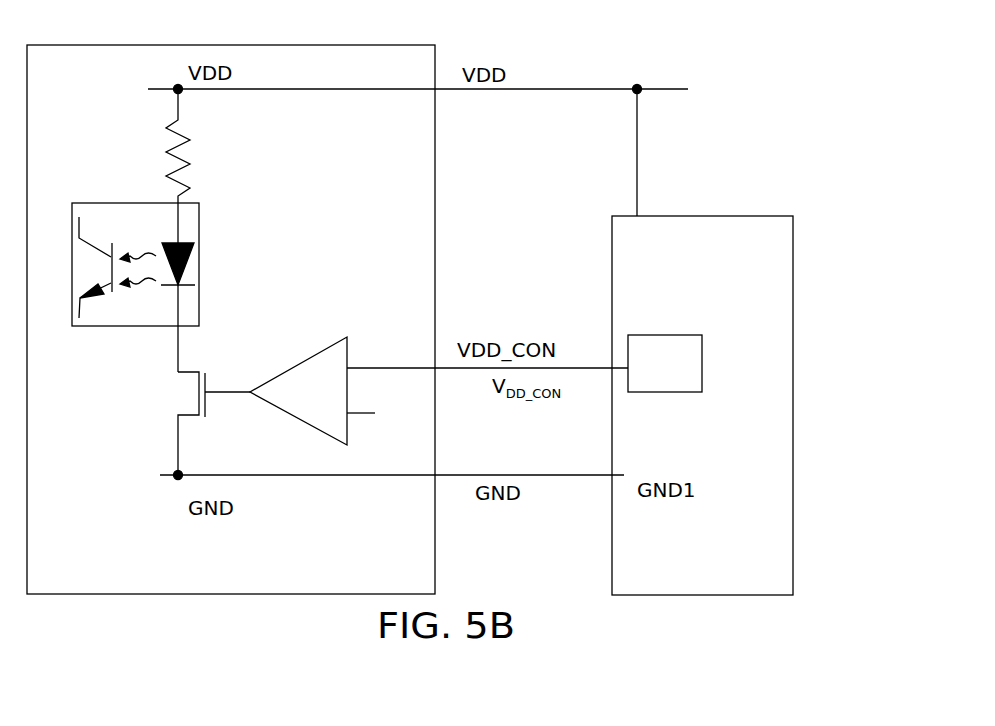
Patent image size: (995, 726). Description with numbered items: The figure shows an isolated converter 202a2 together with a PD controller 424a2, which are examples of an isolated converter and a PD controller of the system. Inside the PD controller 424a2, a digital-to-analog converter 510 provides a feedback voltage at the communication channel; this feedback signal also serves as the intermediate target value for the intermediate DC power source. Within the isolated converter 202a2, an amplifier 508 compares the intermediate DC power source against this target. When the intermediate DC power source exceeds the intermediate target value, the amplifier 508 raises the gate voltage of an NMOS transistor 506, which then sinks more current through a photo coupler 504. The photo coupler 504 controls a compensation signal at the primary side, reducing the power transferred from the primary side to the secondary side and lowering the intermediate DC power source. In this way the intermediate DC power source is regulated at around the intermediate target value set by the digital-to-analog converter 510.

The isolated converter 202a2 is at (107, 129).
The PD controller 424a2 is at (705, 268).
The photo coupler 504 is at (120, 328).
The NMOS transistor 506 is at (170, 392).
The amplifier 508 is at (330, 345).
The digital-to-analog converter (DAC) 510 is at (677, 335).